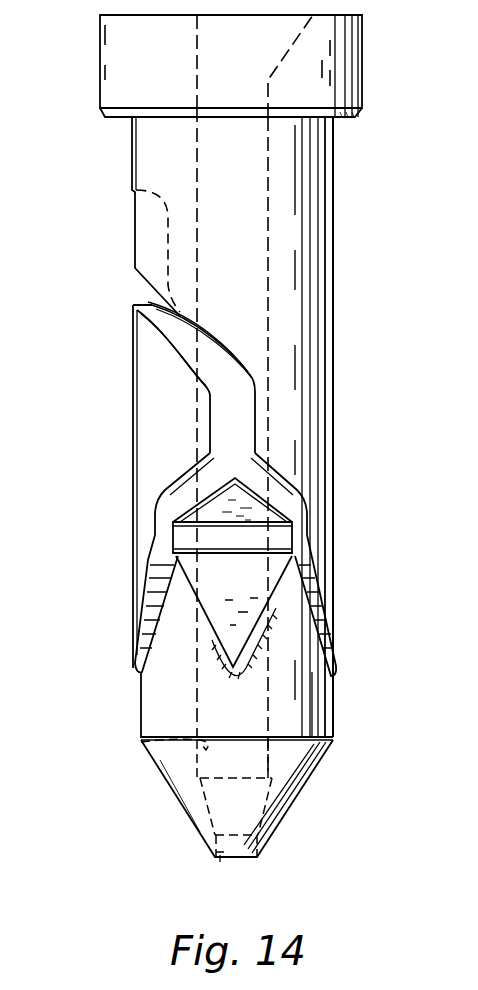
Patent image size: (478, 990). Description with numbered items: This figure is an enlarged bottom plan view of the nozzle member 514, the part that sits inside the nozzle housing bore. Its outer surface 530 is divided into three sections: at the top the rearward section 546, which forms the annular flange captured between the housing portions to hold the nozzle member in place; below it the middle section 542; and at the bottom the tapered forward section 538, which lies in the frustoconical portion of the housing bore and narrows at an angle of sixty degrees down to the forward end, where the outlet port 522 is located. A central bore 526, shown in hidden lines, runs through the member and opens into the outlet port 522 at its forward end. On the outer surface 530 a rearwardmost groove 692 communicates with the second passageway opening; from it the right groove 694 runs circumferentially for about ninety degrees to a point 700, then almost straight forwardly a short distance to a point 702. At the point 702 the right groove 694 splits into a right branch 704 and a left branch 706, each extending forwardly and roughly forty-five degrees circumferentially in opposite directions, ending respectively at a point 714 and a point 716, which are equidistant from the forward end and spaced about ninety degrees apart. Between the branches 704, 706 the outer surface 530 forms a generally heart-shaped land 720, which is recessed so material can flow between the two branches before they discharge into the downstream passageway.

The rearward section 546 is at (92, 76).
The nozzle member 514 is at (131, 147).
The rearwardmost groove 692 is at (138, 227).
The outer surface 530 is at (307, 266).
The right groove 694 is at (160, 333).
The point 700 is at (264, 379).
The middle section 542 is at (120, 408).
The point 702 is at (286, 461).
The left branch 706 is at (165, 490).
The right branch 704 is at (295, 501).
The heart-shaped land 720 is at (176, 542).
The point 716 is at (130, 670).
The point 714 is at (340, 676).
The forward section 538 is at (155, 791).
The central bore 526 is at (160, 747).
The outlet port 522 is at (232, 858).